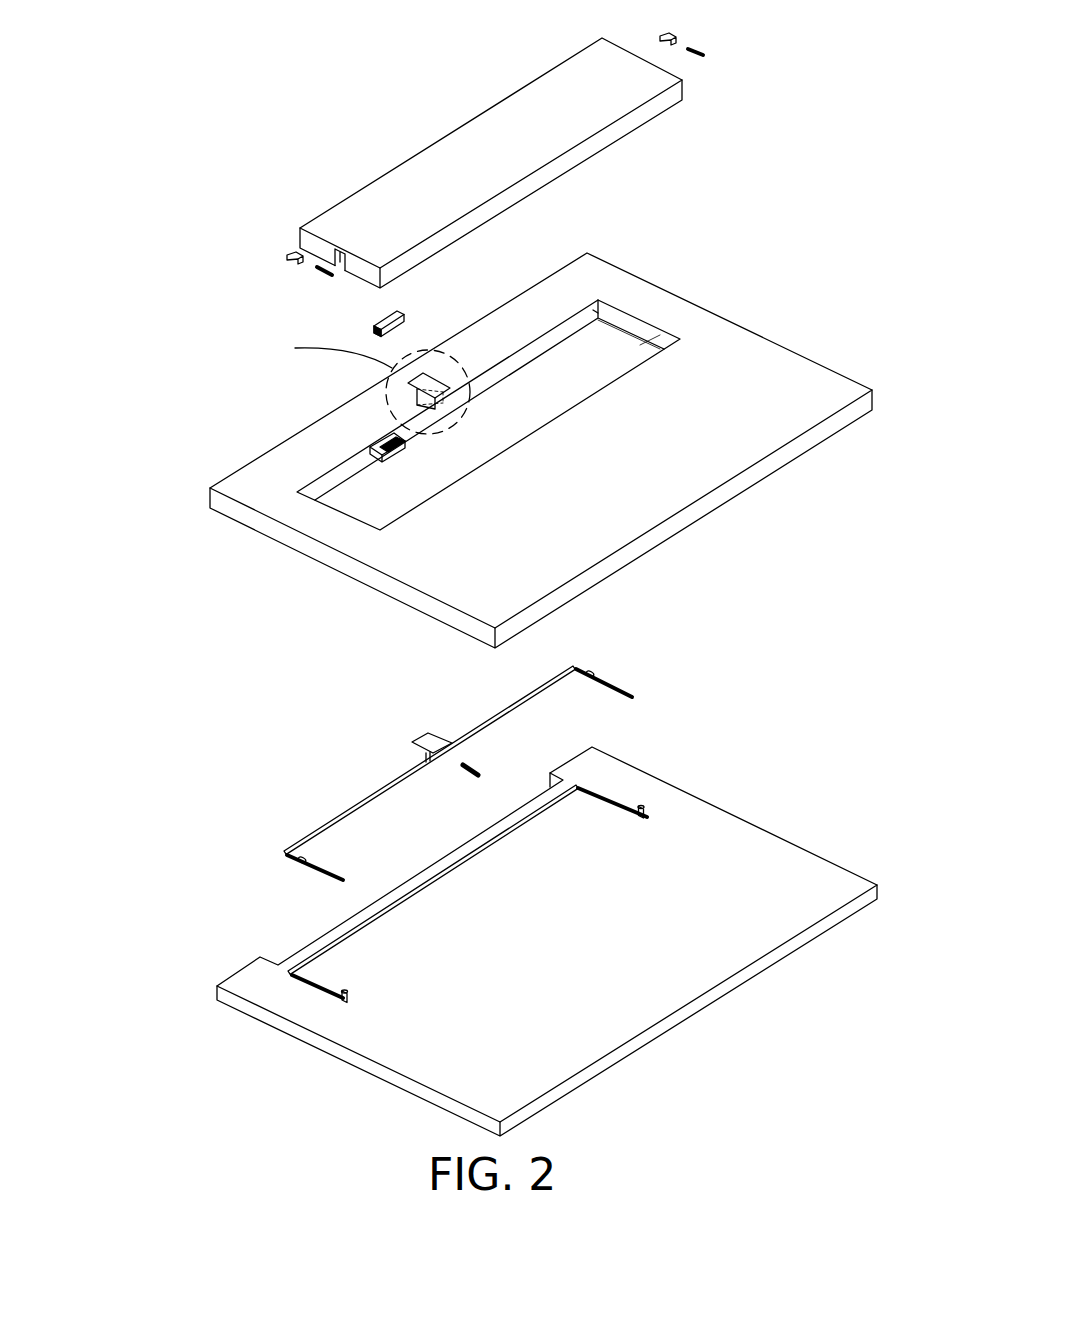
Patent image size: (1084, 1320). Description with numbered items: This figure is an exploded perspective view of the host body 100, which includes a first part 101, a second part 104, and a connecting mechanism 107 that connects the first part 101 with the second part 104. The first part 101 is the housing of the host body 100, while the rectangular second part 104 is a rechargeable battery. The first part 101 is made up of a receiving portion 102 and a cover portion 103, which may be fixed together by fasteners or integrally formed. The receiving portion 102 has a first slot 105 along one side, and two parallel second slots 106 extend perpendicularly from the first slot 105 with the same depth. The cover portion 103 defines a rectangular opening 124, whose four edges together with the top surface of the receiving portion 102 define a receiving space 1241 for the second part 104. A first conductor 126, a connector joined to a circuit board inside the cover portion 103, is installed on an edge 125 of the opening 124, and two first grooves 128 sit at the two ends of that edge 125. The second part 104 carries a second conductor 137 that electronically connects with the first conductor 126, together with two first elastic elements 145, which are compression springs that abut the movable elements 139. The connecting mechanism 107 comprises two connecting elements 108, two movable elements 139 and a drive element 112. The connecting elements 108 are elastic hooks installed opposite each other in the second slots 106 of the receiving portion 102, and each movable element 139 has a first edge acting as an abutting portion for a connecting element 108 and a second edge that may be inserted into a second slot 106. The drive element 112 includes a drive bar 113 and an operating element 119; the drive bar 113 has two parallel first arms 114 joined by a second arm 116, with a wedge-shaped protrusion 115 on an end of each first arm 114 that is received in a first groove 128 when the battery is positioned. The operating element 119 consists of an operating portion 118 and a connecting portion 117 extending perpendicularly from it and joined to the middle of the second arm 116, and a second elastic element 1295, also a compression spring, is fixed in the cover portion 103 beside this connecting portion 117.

The host body 100 is at (221, 148).
The second part 104 is at (565, 125).
The movable element 139 is at (293, 265).
The first elastic element 145 is at (325, 277).
The second conductor 137 is at (400, 315).
The connecting mechanism 107 is at (164, 329).
The first part 101 is at (812, 590).
The cover portion 103 is at (541, 428).
The edge 125 is at (558, 337).
The first groove 128 is at (598, 308).
The receiving space 1241 is at (592, 358).
The opening 124 is at (628, 358).
The first conductor 126 is at (382, 435).
The receiving portion 102 is at (523, 921).
The first slot 105 is at (487, 941).
The second slot 106 is at (312, 987).
The connecting element 108 is at (343, 997).
The drive element 112 is at (289, 715).
The drive bar 113 is at (229, 788).
The second arm 116 is at (322, 827).
The protrusion 115 is at (296, 860).
The first arm 114 is at (308, 873).
The operating element 119 is at (425, 671).
The connecting portion 117 is at (418, 755).
The operating portion 118 is at (427, 740).
The second elastic element 1295 is at (467, 773).